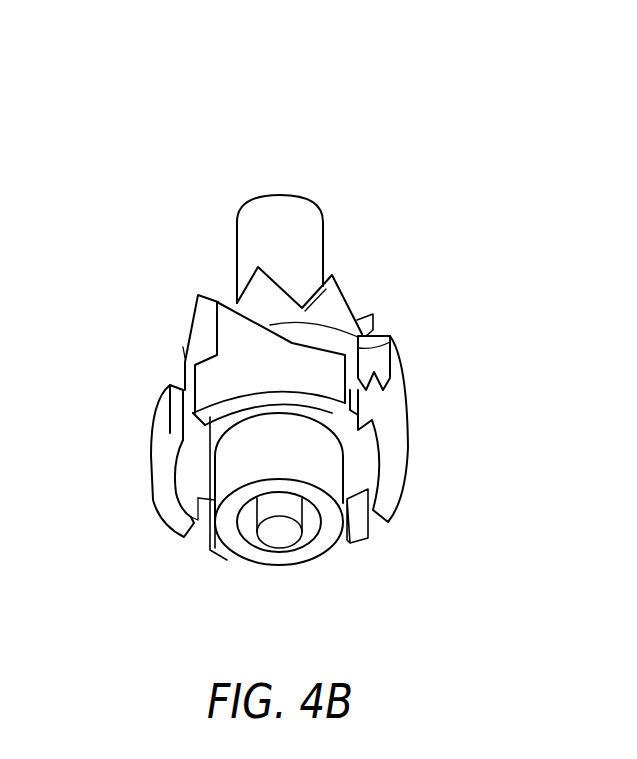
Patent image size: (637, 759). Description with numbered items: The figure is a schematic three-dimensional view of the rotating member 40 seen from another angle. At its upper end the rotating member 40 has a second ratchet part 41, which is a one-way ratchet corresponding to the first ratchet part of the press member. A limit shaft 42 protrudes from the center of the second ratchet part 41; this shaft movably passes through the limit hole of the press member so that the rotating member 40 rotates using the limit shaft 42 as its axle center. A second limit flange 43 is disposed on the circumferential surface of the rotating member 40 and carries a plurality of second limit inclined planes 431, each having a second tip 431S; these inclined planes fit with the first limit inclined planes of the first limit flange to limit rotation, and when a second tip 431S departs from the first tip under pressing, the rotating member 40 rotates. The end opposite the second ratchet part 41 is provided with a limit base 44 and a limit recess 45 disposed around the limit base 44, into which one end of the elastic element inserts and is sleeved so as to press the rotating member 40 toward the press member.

The rotating member 40 is at (84, 172).
The second ratchet part 41 is at (358, 318).
The limit shaft 42 is at (253, 232).
The second limit flange 43 is at (206, 376).
The second limit inclined plane 431 is at (392, 341).
The second tip 431S is at (220, 298).
The limit base 44 is at (262, 557).
The limit recess 45 is at (193, 472).